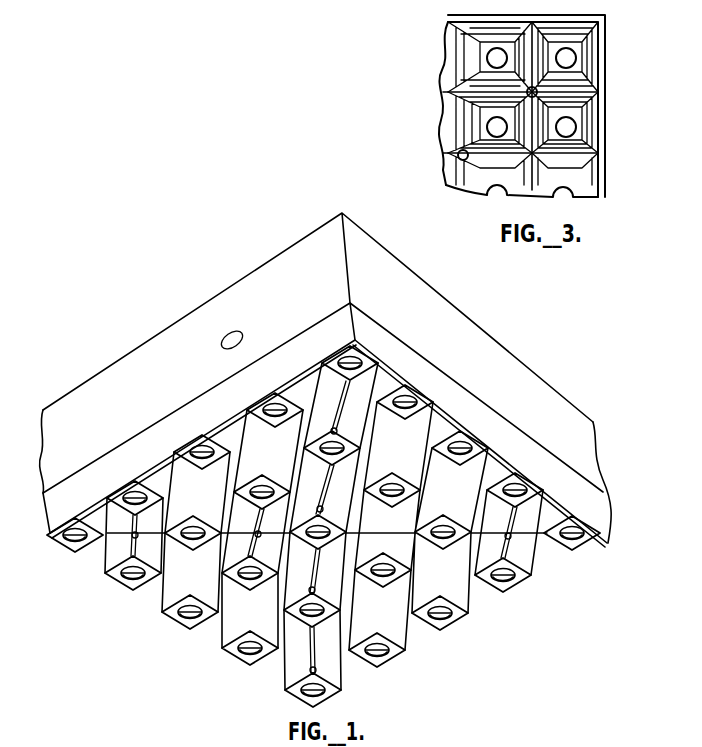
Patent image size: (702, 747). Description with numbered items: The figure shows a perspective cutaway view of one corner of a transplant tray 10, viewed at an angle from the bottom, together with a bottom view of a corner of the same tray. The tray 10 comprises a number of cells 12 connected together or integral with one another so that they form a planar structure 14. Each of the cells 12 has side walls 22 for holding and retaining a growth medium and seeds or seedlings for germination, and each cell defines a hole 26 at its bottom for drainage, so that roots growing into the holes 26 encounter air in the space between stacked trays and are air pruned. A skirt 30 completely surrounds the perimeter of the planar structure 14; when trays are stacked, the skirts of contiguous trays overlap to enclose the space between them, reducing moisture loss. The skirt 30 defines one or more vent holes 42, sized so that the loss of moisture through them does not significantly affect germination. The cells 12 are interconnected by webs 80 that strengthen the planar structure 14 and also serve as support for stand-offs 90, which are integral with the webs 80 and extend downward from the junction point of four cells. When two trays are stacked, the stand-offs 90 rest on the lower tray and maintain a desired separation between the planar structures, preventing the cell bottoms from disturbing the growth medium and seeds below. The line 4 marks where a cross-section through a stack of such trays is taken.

In FIG. 3, the transplant tray 10 is at (410, 32).
In FIG. 1, the transplant tray 10 is at (222, 248).
In FIG. 1, the line 4— 4 is at (230, 281).
In FIG. 1, the vent hole 42 is at (240, 328).
In FIG. 3, the skirt 30 is at (606, 60).
In FIG. 1, the skirt 30 is at (558, 421).
In FIG. 1, the side walls 22 is at (355, 400).
In FIG. 1, the holes 26 is at (423, 393).
In FIG. 3, the stand-offs 90 is at (568, 117).
In FIG. 1, the stand-offs 90 is at (338, 391).
In FIG. 1, the webs 80 is at (490, 520).
In FIG. 1, the cells 12 is at (563, 553).
In FIG. 1, the planar structure 14 is at (601, 577).